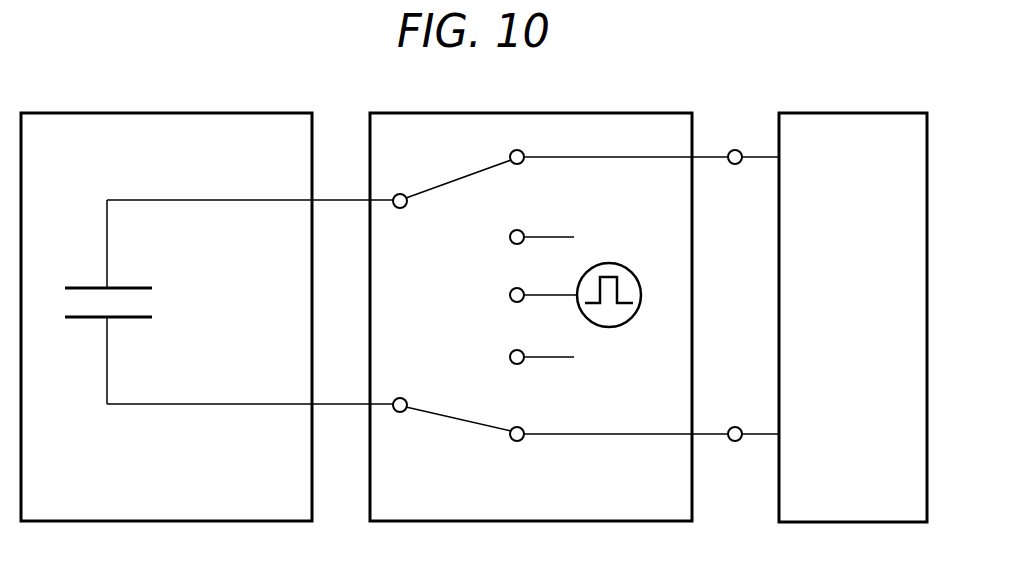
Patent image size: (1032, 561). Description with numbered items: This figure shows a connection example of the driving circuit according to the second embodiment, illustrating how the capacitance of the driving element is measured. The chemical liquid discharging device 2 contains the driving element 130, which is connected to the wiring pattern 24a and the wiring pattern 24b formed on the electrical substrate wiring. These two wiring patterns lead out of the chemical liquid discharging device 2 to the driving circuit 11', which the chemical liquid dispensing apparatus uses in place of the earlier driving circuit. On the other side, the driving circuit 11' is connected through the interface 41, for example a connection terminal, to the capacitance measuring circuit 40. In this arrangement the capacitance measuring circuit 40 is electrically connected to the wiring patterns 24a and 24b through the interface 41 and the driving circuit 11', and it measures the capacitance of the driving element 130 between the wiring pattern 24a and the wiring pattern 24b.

The chemical liquid discharging device 2 is at (285, 111).
The driving element 130 is at (84, 287).
The wiring pattern 24a is at (128, 199).
The wiring pattern 24b is at (180, 403).
The driving circuit 11' is at (531, 289).
The interface 41 is at (736, 149).
The capacitance measuring circuit 40 is at (894, 111).